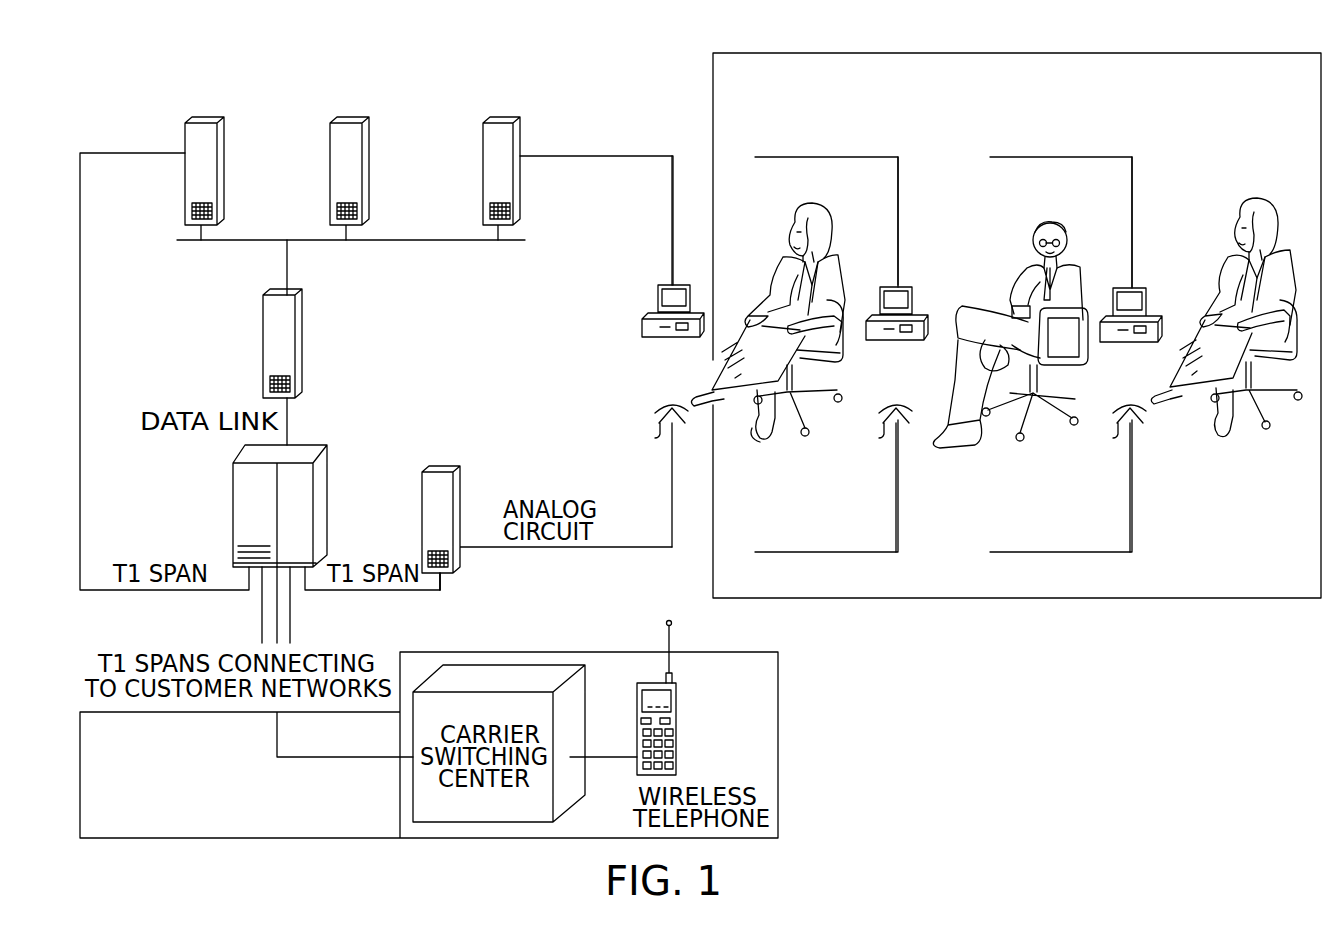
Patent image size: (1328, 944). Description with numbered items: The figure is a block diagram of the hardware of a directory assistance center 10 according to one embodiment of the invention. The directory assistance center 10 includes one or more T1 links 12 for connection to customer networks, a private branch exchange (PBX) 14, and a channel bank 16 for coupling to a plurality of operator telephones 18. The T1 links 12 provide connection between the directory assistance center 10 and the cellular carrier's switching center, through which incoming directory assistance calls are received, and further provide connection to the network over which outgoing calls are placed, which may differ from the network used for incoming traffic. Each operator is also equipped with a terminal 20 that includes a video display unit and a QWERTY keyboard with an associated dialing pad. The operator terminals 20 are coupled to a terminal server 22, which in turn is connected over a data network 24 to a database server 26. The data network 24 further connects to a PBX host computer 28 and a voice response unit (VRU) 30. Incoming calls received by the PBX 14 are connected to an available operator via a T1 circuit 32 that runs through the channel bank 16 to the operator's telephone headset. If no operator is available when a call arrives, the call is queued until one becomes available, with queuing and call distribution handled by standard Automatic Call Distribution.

The directory assistance center 10 is at (562, 138).
The T1 links 12 is at (316, 604).
The private branch exchange (PBX) 14 is at (231, 465).
The channel bank 16 is at (420, 484).
The operator telephones 18 is at (660, 425).
The terminal 20 is at (677, 284).
The terminal server 22 is at (481, 144).
The data network 24 is at (520, 242).
The database server 26 is at (328, 143).
The PBX host computer 28 is at (261, 305).
The voice response unit (VRU) 30 is at (181, 136).
The T1 circuit 32 is at (435, 592).